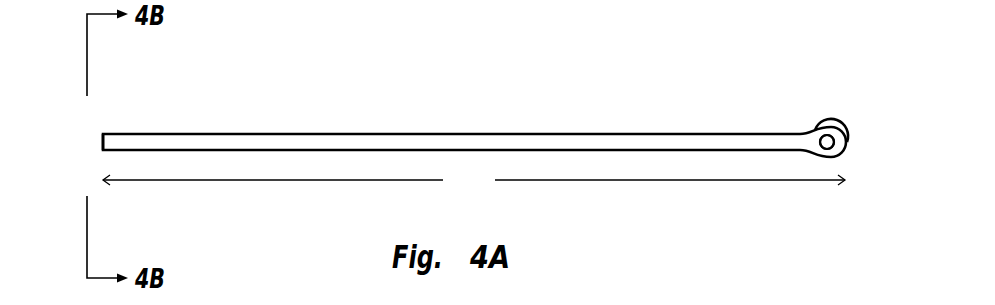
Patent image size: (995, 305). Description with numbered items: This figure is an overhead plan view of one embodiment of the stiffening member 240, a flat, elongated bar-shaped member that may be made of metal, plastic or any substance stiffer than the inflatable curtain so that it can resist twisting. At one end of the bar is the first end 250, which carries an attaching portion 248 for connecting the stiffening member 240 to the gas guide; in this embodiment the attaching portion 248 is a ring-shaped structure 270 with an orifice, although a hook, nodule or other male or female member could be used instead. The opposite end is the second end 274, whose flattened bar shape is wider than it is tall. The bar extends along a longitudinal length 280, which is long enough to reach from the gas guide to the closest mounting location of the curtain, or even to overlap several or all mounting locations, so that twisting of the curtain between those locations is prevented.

The stiffening member 240 is at (662, 112).
The second end 274 is at (103, 142).
The ring-shaped structure 270 is at (821, 129).
The attaching portion 248 is at (829, 128).
The first end 250 is at (827, 142).
The longitudinal length 280 is at (474, 180).